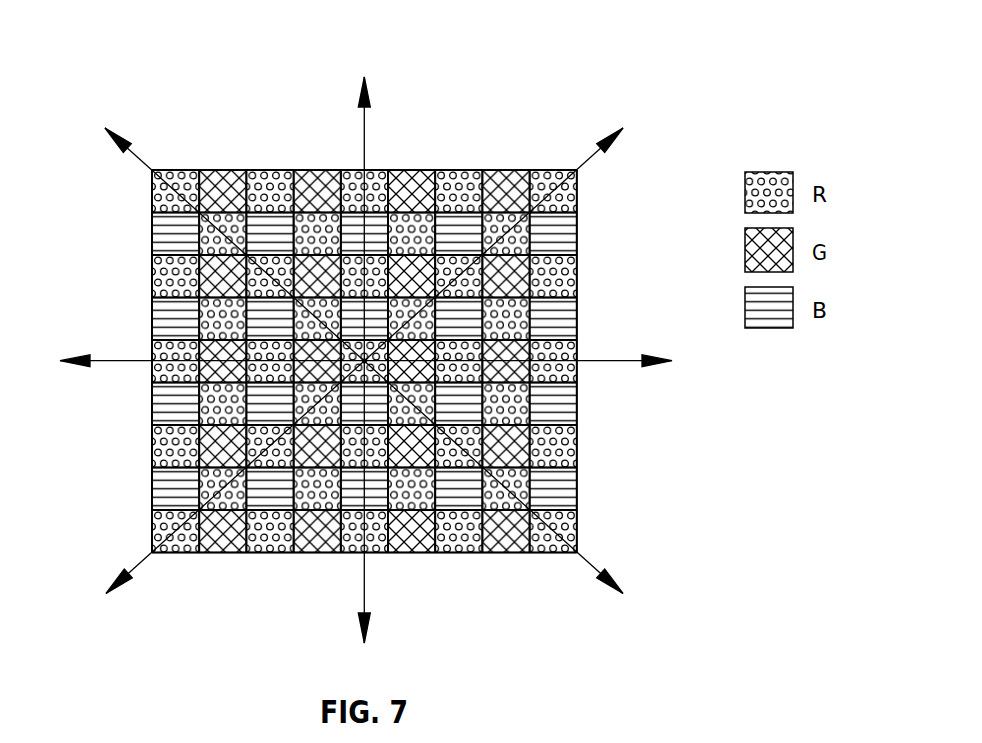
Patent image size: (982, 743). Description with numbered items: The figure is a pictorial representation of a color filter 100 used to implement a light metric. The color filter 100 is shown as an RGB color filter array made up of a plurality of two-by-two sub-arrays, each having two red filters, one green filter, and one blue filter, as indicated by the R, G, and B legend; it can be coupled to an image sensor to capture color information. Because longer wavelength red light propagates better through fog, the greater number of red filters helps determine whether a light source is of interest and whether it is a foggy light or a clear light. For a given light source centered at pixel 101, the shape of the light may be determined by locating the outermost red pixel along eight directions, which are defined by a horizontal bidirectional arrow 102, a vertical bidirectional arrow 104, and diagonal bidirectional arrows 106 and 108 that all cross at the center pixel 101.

The color filter 100 is at (528, 86).
The pixel 101 is at (366, 359).
The horizontal bidirectional arrow 102 is at (121, 355).
The vertical bidirectional arrow 104 is at (366, 138).
The diagonal bidirectional arrow 106 is at (583, 164).
The diagonal bidirectional arrow 108 is at (143, 161).